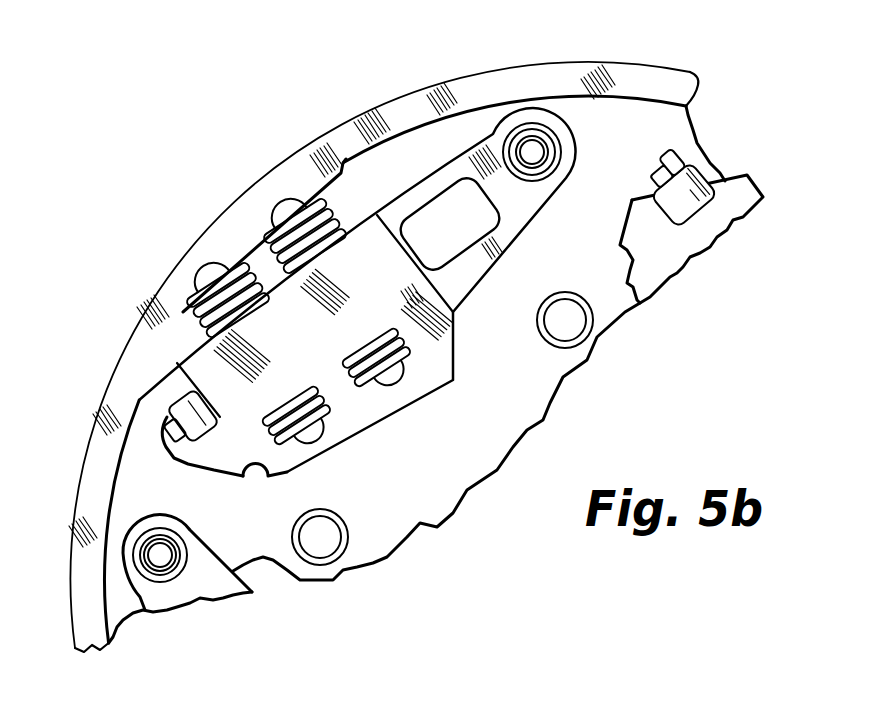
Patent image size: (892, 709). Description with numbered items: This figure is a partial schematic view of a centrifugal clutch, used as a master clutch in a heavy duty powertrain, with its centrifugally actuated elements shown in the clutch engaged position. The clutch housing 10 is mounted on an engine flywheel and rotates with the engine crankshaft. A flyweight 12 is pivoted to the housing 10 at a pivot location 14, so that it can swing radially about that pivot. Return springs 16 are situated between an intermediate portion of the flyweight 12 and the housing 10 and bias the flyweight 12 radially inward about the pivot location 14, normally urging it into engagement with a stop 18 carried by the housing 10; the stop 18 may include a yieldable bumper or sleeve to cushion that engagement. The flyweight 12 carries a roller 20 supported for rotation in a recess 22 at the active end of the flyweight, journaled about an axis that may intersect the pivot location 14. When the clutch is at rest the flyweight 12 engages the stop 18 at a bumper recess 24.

The clutch housing 10 is at (108, 382).
The flyweight 12 is at (382, 292).
The pivot location 14 is at (535, 151).
The return springs 16 is at (284, 207).
The stop 18 is at (327, 538).
The roller 20 is at (188, 416).
The recess 22 is at (210, 468).
The bumper recess 24 is at (265, 486).